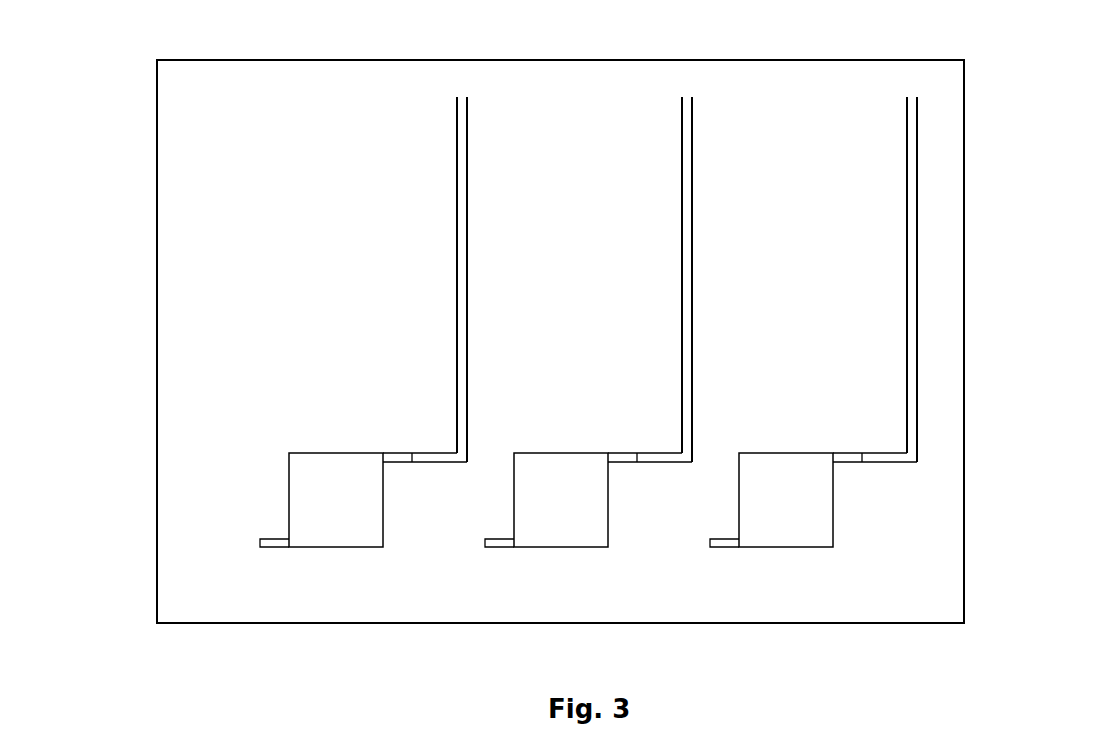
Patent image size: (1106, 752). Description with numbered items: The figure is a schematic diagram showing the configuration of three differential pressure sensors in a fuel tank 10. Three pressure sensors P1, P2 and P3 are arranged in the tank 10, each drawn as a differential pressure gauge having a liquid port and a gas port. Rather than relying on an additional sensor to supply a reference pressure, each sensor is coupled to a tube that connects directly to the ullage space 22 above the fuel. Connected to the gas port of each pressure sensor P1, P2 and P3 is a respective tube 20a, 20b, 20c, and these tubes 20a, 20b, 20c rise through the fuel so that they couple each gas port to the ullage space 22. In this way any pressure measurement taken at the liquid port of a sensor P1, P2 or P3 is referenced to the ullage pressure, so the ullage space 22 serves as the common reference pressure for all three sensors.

The tank 10 is at (964, 153).
The ullage space 22 is at (386, 78).
The tube 20a is at (467, 207).
The tube 20b is at (692, 207).
The tube 20c is at (917, 207).
The pressure sensor P1 is at (363, 547).
The pressure sensor P2 is at (588, 547).
The pressure sensor P3 is at (813, 547).